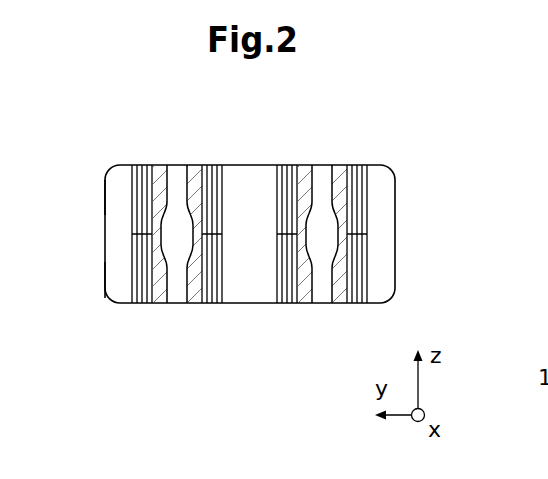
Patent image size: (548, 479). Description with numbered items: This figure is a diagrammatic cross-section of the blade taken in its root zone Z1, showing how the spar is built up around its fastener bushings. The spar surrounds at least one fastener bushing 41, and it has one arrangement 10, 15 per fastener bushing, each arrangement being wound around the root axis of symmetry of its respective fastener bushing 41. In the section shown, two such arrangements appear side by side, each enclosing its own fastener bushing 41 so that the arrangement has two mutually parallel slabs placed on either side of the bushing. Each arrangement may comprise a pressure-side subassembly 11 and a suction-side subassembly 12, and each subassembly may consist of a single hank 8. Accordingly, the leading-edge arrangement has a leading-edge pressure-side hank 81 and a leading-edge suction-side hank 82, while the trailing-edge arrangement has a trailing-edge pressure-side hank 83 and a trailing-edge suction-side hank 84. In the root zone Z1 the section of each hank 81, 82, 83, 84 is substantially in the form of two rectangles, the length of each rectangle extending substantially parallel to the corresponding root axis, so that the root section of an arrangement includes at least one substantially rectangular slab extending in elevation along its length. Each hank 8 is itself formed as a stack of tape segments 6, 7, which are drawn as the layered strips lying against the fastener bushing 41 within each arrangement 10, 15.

The root zone Z1 is at (253, 258).
The arrangement 10 is at (179, 230).
The pressure-side subassembly 11 is at (120, 280).
The suction-side subassembly 12 is at (120, 195).
The arrangement 15 is at (311, 320).
The fastener bushing 41 is at (167, 180).
The tape segment 6 is at (179, 192).
The tape segment 7 is at (205, 165).
The hank 8 is at (253, 230).
The leading-edge pressure-side hank 81 is at (208, 303).
The leading-edge suction-side hank 82 is at (150, 165).
The trailing-edge pressure-side hank 83 is at (358, 250).
The trailing-edge suction-side hank 84 is at (352, 165).